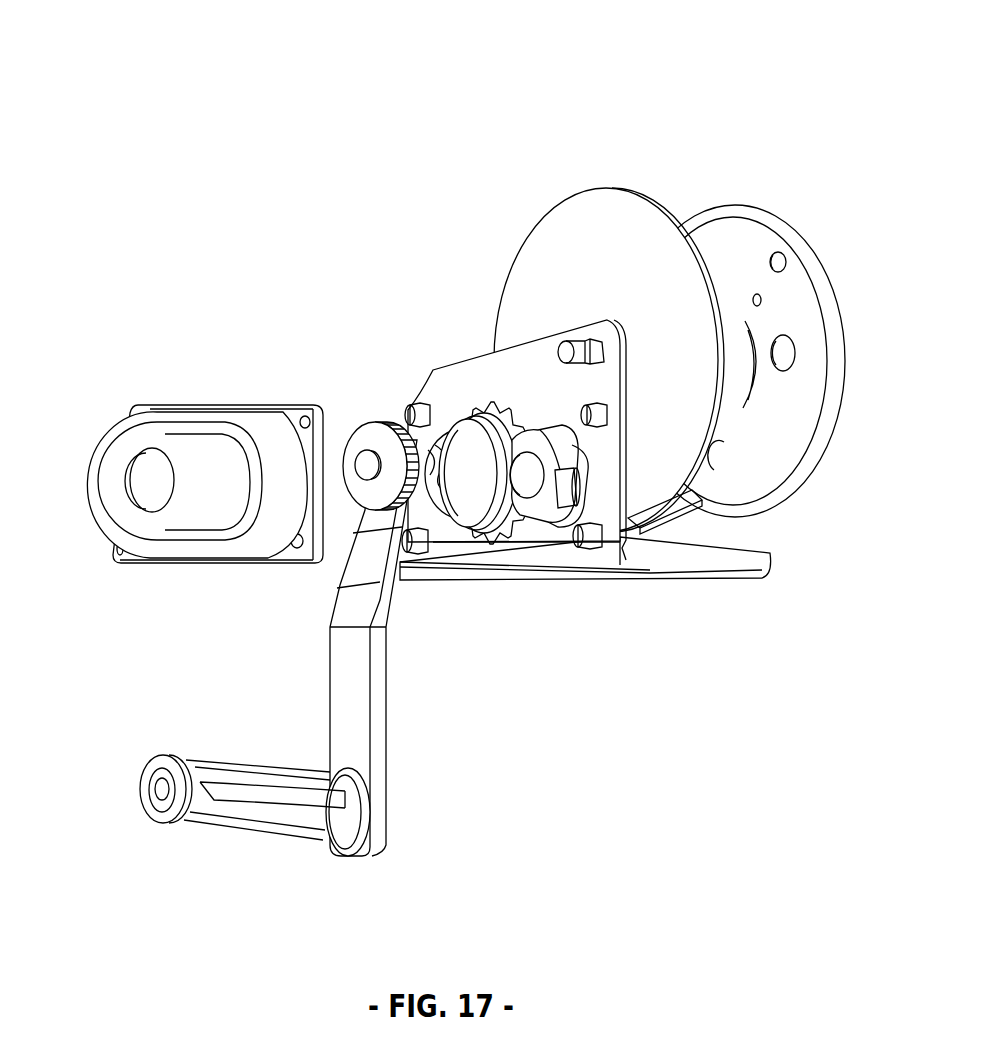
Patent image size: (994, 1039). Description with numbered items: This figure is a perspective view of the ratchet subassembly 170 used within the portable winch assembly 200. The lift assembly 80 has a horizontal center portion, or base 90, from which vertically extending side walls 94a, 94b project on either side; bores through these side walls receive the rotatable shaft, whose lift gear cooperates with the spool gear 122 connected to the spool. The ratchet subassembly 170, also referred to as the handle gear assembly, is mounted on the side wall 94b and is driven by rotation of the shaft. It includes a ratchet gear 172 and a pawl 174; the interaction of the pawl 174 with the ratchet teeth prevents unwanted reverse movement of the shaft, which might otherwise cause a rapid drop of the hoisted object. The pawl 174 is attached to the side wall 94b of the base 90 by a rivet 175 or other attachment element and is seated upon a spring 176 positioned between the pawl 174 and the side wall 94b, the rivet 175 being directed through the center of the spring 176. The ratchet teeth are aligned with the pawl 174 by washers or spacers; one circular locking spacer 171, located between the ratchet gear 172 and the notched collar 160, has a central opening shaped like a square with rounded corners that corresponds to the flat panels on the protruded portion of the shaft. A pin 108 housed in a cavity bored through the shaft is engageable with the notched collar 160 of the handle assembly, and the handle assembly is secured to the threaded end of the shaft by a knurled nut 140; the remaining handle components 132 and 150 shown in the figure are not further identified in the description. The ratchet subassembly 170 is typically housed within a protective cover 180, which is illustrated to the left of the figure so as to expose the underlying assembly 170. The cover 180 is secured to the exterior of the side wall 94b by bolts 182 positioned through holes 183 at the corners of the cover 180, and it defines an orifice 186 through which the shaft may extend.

The winch assembly 200 is at (180, 185).
The lift assembly 80 is at (704, 197).
The side wall 94b is at (474, 368).
The side wall 94a is at (766, 550).
The base 90 is at (626, 439).
The pin 108 is at (453, 460).
The ratchet subassembly 170 is at (536, 488).
The bolts 182 is at (597, 413).
The protective cover 180 is at (191, 491).
The knurled nut 140 is at (365, 442).
The notched collar 160 is at (428, 457).
The orifice 186 is at (150, 490).
The holes 183 is at (292, 540).
The locking spacer 171 is at (455, 517).
The ratchet gear 172 is at (488, 548).
The pawl 174 is at (517, 510).
The rivet 175 is at (535, 485).
The spring 176 is at (560, 493).
The spool gear 122 is at (650, 500).
The crank arm 132 is at (340, 663).
The handle 150 is at (257, 787).